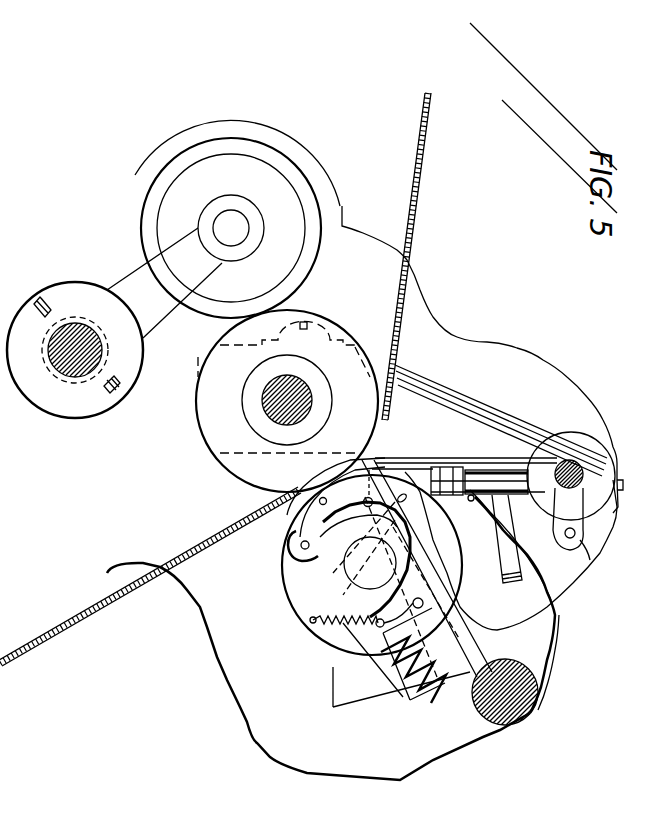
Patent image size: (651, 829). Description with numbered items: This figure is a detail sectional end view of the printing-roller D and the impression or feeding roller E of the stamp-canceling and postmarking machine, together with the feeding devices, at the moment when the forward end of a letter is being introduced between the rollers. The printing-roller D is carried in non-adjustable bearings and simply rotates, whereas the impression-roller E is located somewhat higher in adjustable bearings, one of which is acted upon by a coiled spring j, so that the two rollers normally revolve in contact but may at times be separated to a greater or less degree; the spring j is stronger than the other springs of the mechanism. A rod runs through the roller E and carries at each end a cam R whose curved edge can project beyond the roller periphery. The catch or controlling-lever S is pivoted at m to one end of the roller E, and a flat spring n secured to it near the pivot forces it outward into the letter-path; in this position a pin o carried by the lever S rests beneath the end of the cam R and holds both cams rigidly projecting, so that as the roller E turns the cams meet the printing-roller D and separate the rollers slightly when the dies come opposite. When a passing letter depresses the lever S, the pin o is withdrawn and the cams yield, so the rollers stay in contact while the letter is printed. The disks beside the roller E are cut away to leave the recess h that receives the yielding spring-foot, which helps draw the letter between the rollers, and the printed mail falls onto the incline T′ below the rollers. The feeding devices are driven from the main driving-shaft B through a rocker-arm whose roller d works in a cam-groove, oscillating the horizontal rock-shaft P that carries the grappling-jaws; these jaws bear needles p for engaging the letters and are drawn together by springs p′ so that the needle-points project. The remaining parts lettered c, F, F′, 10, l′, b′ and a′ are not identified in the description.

The casing c is at (35, 600).
The flywheel F is at (263, 143).
The flywheel hub F′ is at (237, 220).
The main driving-shaft B is at (67, 377).
The printing-roller D is at (287, 399).
The incline T′ is at (421, 163).
The catch or controlling-lever S is at (285, 518).
The flat spring n is at (321, 498).
The pivot m is at (303, 555).
The cam R is at (372, 576).
The impression or feeding roller E is at (268, 600).
The spring 10 is at (343, 630).
The roller l′ is at (423, 603).
The coiled spring j is at (405, 680).
The recess or space h is at (388, 660).
The needles p is at (443, 469).
The springs p′ is at (460, 470).
The roller d is at (462, 504).
The plunger b′ is at (498, 545).
The ring a′ is at (511, 551).
The pin o is at (404, 492).
The rock-shaft P is at (573, 487).